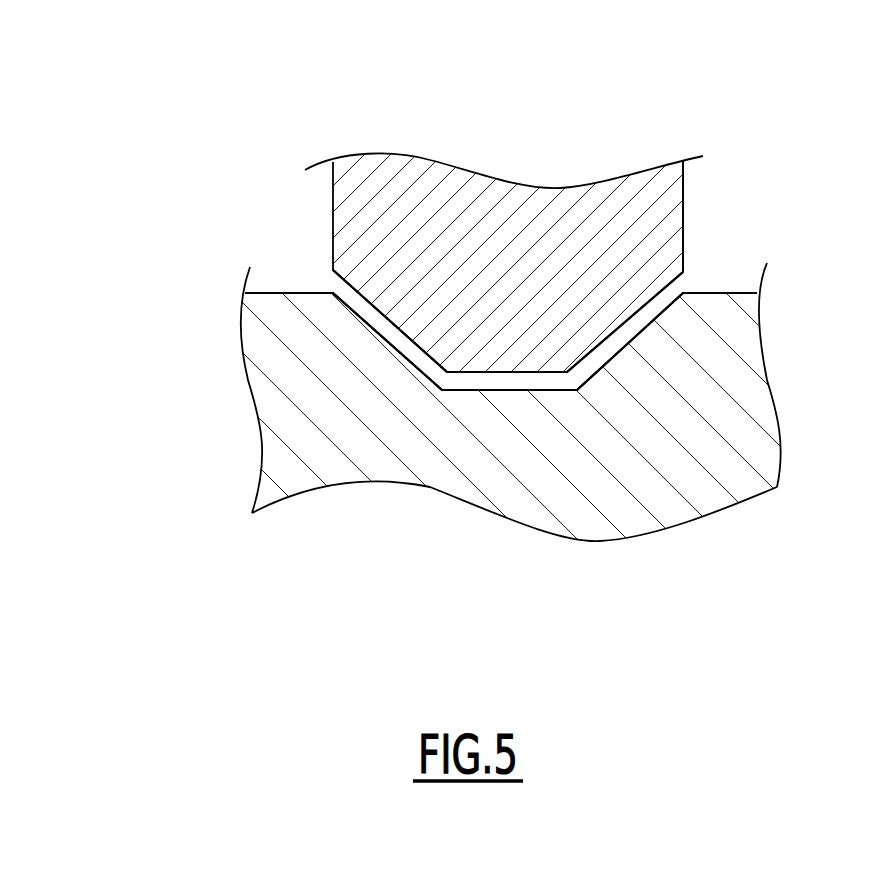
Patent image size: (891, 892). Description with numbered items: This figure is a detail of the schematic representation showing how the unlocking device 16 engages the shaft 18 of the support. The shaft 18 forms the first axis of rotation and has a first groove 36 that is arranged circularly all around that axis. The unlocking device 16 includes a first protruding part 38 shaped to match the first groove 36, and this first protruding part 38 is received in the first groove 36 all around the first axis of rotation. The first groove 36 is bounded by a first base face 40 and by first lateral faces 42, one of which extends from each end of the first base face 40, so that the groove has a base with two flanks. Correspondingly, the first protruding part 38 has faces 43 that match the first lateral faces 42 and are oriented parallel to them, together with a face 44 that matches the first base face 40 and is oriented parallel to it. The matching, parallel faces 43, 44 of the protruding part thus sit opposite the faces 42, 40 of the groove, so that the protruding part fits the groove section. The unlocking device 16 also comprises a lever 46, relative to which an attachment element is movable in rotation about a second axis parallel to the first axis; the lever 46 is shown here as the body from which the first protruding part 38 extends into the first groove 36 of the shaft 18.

The unlocking device 16 is at (690, 178).
The shaft 18 is at (533, 472).
The first groove 36 is at (462, 383).
The first protruding part 38 is at (616, 288).
The first base face 40 is at (505, 382).
The first lateral face 42 is at (362, 309).
The faces of the first protruding part 43 is at (379, 320).
The face of the first protruding part 44 is at (480, 380).
The lever 46 is at (647, 212).